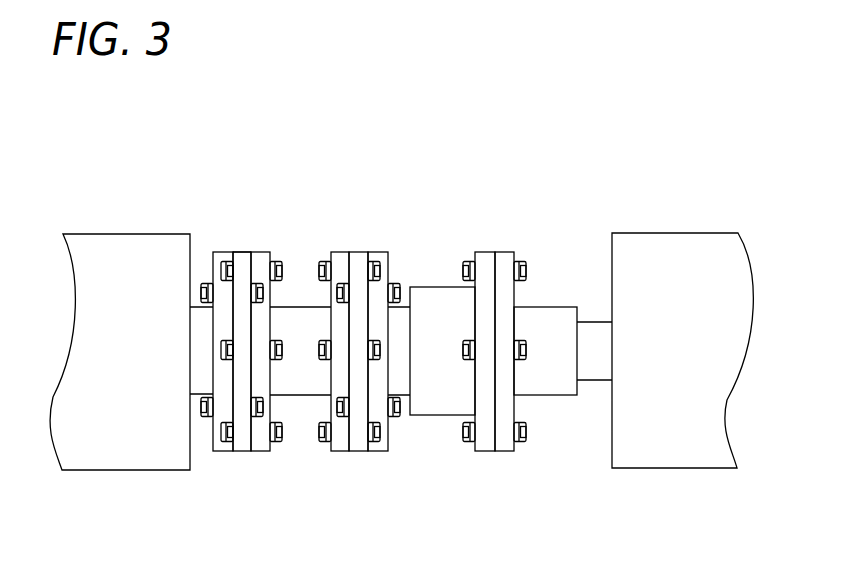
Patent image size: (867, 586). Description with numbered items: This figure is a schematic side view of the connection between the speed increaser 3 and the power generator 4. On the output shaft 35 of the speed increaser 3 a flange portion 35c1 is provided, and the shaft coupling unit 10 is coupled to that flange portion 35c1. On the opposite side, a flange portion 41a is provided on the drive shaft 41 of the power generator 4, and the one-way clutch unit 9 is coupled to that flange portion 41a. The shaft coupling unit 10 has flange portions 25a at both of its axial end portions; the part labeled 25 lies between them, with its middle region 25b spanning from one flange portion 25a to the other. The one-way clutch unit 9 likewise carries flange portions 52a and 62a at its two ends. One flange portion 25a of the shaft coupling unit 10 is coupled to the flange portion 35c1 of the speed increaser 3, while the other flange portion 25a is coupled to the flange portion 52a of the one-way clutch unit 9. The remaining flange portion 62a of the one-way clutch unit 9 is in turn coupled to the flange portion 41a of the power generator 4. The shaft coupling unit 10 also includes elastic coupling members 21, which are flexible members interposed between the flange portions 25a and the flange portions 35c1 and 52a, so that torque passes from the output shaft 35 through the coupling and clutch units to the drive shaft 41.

The speed increaser 3 is at (125, 248).
The power generator 4 is at (673, 248).
The shaft coupling unit 10 is at (232, 225).
The one-way clutch unit 9 is at (495, 227).
The intermediate shaft 25 is at (299, 300).
The flange portion 25a is at (258, 452).
The shaft portion of intermediate shaft 25b is at (296, 397).
The output shaft 35 is at (197, 397).
The flange portion 35c1 is at (228, 453).
The elastic coupling member 21 is at (240, 452).
The flange portion 52a is at (378, 452).
The flange portion 62a is at (483, 452).
The flange portion 41a is at (503, 452).
The drive shaft 41 is at (565, 397).